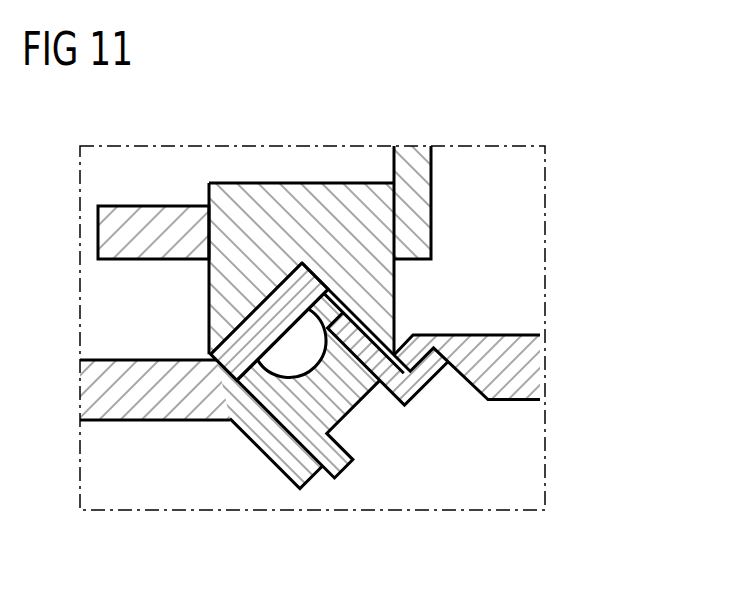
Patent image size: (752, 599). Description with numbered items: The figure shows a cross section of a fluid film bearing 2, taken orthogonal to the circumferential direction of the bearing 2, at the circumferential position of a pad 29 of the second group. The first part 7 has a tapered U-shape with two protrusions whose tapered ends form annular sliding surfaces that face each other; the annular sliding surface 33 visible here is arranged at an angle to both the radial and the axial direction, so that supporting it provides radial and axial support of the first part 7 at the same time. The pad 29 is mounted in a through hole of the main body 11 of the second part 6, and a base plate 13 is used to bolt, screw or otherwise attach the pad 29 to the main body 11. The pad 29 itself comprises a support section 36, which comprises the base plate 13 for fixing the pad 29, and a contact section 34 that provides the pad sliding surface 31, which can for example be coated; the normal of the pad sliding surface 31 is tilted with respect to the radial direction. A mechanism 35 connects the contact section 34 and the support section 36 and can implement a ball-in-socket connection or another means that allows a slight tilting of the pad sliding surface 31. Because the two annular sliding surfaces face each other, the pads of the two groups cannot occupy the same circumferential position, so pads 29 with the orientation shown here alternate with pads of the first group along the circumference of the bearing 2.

The bearing 2 is at (582, 199).
The second part 6 is at (510, 320).
The first part 7 is at (318, 208).
The main body 11 is at (540, 358).
The base plate 13 is at (358, 393).
The pad 29 is at (216, 432).
The pad sliding surface 31 is at (292, 318).
The annular sliding surface 33 is at (279, 298).
The contact section 34 is at (240, 343).
The mechanism 35 is at (284, 358).
The support section 36 is at (294, 412).